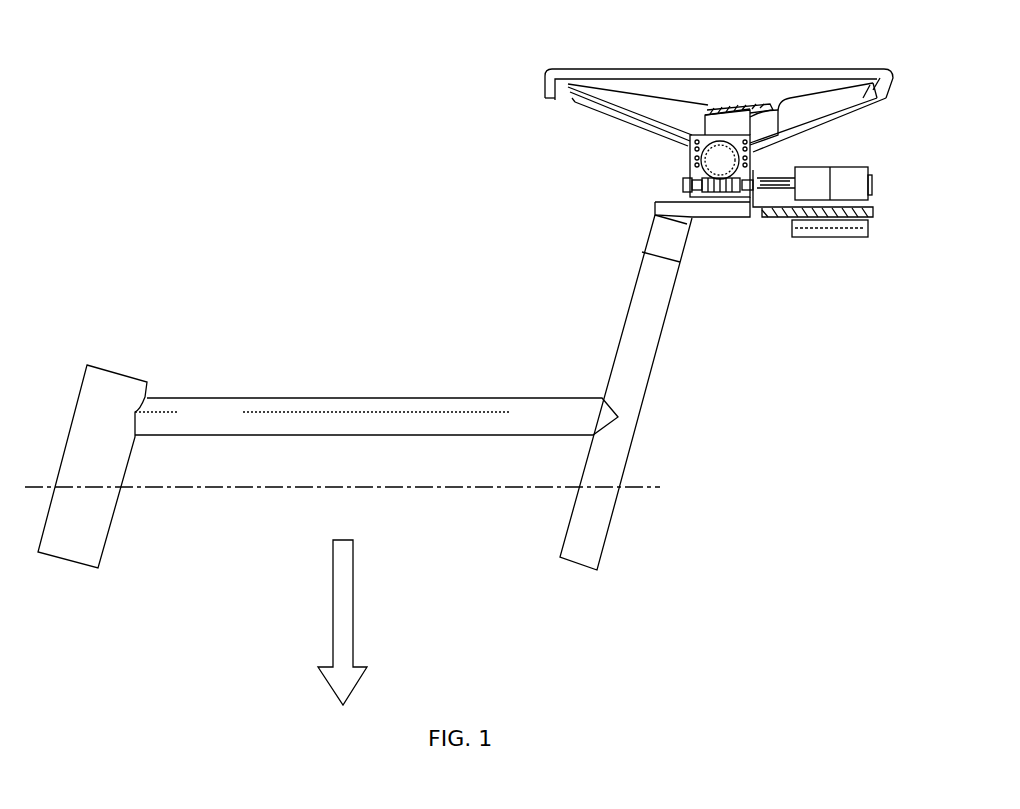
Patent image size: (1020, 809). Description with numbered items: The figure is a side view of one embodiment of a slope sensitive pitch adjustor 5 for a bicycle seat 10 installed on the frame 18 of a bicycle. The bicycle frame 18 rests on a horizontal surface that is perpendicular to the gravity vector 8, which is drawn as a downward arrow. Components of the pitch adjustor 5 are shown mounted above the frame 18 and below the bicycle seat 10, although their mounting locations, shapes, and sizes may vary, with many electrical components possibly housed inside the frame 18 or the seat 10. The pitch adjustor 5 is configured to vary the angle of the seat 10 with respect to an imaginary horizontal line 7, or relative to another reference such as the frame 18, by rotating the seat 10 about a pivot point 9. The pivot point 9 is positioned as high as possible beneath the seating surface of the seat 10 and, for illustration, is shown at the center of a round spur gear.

The bicycle seat 10 is at (800, 70).
The slope sensitive pitch adjustor 5 is at (686, 159).
The pivot point 9 is at (720, 160).
The bicycle frame 18 is at (243, 398).
The imaginary horizontal line 7 is at (183, 490).
The gravity vector 8 is at (353, 615).